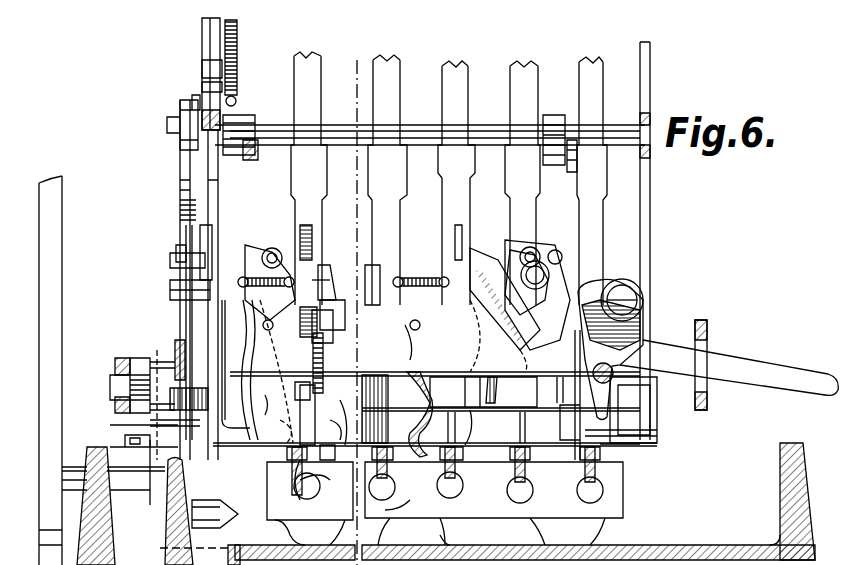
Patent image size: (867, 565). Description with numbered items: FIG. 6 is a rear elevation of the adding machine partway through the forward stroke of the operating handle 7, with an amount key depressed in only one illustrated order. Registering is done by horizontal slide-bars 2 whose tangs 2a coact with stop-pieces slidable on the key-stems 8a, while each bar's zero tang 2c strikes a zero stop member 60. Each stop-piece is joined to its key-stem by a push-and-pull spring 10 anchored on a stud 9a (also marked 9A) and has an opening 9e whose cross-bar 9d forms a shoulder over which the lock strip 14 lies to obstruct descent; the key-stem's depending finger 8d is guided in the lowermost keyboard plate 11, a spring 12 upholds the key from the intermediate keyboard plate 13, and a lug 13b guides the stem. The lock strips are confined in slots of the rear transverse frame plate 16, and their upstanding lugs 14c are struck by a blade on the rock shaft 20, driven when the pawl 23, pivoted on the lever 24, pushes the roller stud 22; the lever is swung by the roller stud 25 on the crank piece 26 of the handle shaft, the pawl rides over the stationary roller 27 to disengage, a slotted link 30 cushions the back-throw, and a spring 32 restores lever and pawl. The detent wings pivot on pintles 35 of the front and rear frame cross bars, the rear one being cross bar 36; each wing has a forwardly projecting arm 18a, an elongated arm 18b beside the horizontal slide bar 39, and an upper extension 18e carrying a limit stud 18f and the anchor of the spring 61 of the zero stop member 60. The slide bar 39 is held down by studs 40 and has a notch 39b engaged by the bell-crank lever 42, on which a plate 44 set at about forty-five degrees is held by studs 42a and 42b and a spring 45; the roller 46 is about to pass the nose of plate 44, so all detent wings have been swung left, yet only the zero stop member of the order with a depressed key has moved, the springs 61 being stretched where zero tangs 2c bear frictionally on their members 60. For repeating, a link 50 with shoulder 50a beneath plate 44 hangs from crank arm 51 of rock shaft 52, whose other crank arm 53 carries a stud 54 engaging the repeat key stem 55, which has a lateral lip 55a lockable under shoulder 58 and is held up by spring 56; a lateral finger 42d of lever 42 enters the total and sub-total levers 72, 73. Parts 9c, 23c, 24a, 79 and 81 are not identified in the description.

The slide-bar 2 is at (600, 478).
The tang 2a is at (598, 452).
The zero tang 2c is at (422, 532).
The operating handle 7 is at (70, 183).
The key-stem 8a is at (310, 70).
The depending finger 8d is at (409, 459).
The stud 9a is at (344, 423).
The stud 9A is at (331, 264).
The lever arm 9c is at (353, 489).
The cross-bar 9d is at (276, 373).
The opening 9e is at (267, 404).
The push-and-pull spring 10 is at (330, 364).
The lowermost keyboard plate 11 is at (640, 455).
The spring 12 is at (340, 298).
The intermediate keyboard plate 13 is at (368, 278).
The lug 13b is at (330, 262).
The lock strip 14 is at (402, 415).
The lug 14c is at (337, 451).
The rear transverse frame plate 16 is at (228, 432).
The forwardly projecting arm 18a is at (333, 325).
The elongated arm 18b is at (353, 370).
The upper extension 18e is at (470, 270).
The limit stud 18f is at (280, 245).
The rock shaft 20 is at (230, 340).
The roller stud 22 is at (170, 263).
The pawl 23 is at (180, 162).
The rod bearing 23c is at (175, 355).
The lever 24 is at (186, 234).
The rod collar 24a is at (176, 252).
The roller stud 25 is at (216, 516).
The crank piece 26 is at (125, 438).
The roller 27 is at (170, 293).
The slotted link 30 is at (205, 250).
The spring 32 is at (180, 209).
The pintle 35 is at (343, 321).
The rear frame cross bar 36 is at (351, 326).
The horizontal slide bar 39 is at (435, 407).
The notch 39b is at (620, 426).
The stud 40 is at (625, 404).
The bell-crank lever 42 is at (630, 342).
The stud 42a is at (553, 266).
The stud 42b is at (509, 391).
The lateral finger 42d is at (715, 383).
The plate 44 is at (533, 262).
The spring 45 is at (500, 275).
The roller 46 is at (612, 364).
The link 50 is at (572, 155).
The shoulder 50a is at (591, 395).
The crank arm 51 is at (550, 118).
The rock shaft 52 is at (417, 135).
The crank arm 53 is at (240, 120).
The stud 54 is at (192, 102).
The repeat key stem 55 is at (202, 34).
The lateral lip 55a is at (202, 66).
The spring 56 is at (238, 40).
The shoulder 58 is at (202, 88).
The zero stop member 60 is at (475, 392).
The spring 61 is at (262, 265).
The lever 72 is at (708, 402).
The lever 73 is at (700, 410).
The support 79 is at (162, 447).
The bearing block 81 is at (165, 358).